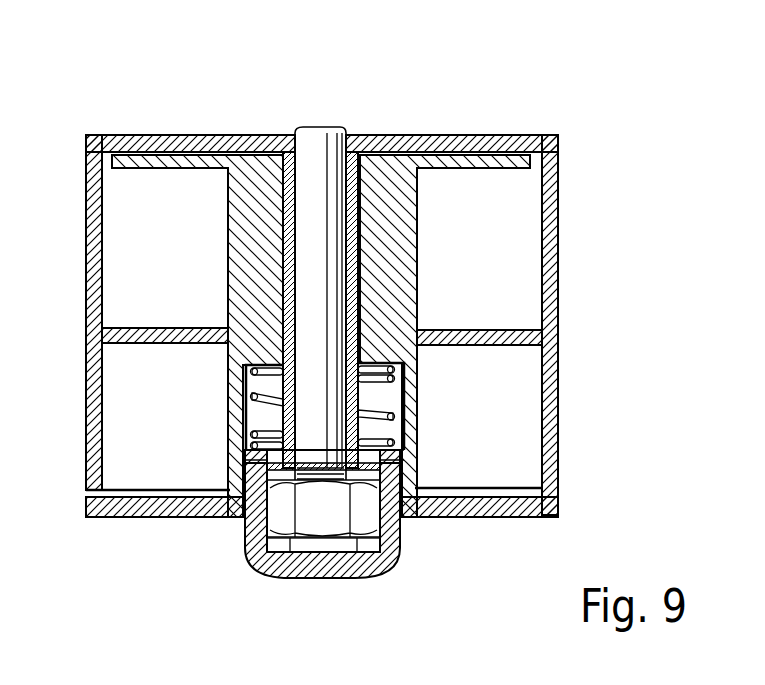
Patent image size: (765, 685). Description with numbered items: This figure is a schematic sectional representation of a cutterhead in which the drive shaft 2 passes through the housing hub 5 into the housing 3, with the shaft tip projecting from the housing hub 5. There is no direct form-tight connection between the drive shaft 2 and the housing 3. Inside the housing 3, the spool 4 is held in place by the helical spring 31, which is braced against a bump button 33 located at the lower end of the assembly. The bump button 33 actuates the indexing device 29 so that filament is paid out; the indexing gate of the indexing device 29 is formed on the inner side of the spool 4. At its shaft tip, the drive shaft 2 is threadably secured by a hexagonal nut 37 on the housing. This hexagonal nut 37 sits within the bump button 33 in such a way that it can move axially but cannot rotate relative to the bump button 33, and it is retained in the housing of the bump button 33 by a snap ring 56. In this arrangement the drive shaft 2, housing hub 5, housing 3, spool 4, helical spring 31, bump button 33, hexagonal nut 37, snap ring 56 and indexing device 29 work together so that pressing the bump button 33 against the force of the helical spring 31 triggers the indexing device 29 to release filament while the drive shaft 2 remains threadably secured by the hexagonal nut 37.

The drive shaft 2 is at (315, 158).
The housing 3 is at (547, 263).
The spool 4 is at (262, 166).
The housing hub 5 is at (293, 243).
The indexing device 29 is at (240, 492).
The helical spring 31 is at (386, 367).
The bump button 33 is at (390, 537).
The hexagonal nut 37 is at (276, 545).
The snap ring 56 is at (243, 467).